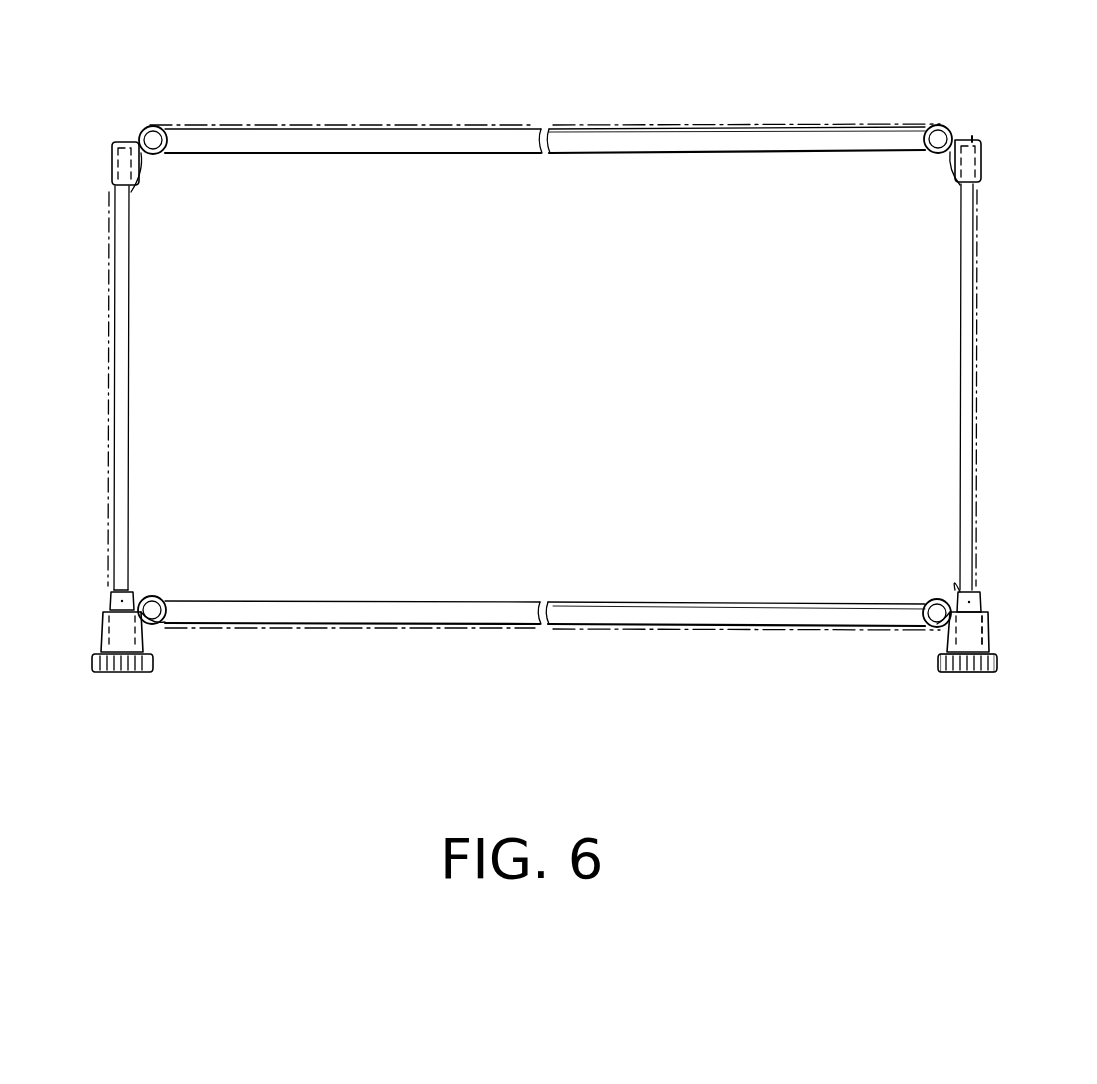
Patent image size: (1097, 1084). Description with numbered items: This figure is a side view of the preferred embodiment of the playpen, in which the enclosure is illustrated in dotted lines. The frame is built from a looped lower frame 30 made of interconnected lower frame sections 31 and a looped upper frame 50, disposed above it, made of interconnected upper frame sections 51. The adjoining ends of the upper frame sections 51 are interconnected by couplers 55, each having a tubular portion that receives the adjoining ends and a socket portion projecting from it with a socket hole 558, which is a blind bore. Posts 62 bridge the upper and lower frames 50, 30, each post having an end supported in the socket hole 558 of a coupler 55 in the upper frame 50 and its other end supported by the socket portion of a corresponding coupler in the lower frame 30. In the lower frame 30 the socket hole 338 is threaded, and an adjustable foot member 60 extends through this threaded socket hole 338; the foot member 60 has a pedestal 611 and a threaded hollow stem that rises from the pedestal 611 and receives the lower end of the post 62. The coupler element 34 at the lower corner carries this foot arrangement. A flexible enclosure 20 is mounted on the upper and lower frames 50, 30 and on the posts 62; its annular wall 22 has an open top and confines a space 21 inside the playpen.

The flexible enclosure 20 is at (418, 126).
The space 21 is at (293, 175).
The annular wall 22 is at (806, 632).
The looped lower frame 30 is at (670, 596).
The lower frame section 31 is at (606, 612).
The bottom connector 34 is at (988, 637).
The socket hole 338 is at (988, 620).
The looped upper frame 50 is at (657, 160).
The upper frame section 51 is at (817, 140).
The coupler 55 is at (982, 152).
The socket hole 558 is at (978, 132).
The adjustable foot member 60 is at (983, 598).
The post 62 is at (967, 405).
The pedestal 611 is at (965, 673).